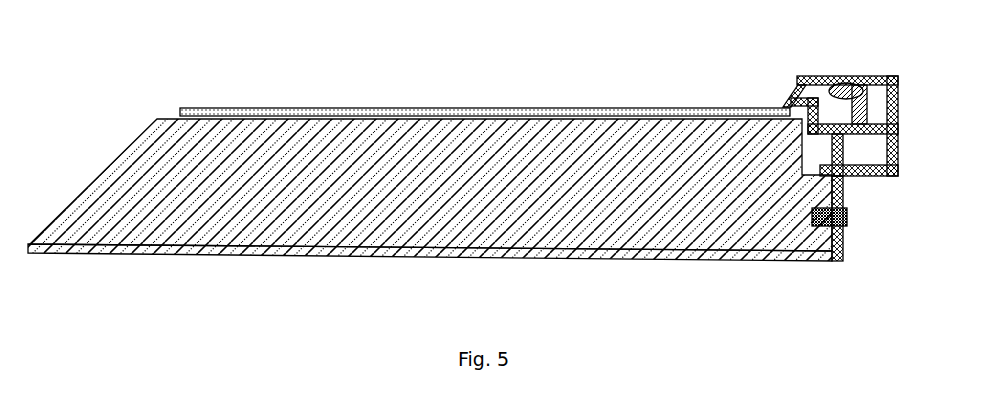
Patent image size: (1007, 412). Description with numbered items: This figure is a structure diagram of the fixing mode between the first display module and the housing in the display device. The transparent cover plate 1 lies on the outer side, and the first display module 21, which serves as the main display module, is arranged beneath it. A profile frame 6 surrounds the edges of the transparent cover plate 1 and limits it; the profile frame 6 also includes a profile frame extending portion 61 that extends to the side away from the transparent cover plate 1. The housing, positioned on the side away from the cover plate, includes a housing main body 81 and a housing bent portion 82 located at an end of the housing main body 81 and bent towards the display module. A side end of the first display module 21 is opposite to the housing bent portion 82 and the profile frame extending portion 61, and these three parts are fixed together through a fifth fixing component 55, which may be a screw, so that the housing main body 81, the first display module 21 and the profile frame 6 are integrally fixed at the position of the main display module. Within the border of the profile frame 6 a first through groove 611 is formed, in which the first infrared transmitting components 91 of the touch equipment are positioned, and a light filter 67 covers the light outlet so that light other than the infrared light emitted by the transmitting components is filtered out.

The transparent cover plate 1 is at (527, 108).
The first display module 21 is at (456, 117).
The housing main body 81 is at (681, 258).
The housing bent portion 82 is at (843, 243).
The profile frame 6 is at (899, 107).
The profile frame extending portion 61 is at (843, 183).
The light filter 67 is at (793, 90).
The first through groove 611 is at (821, 95).
The first infrared transmitting component 91 is at (873, 95).
The fifth fixing component 55 is at (848, 213).